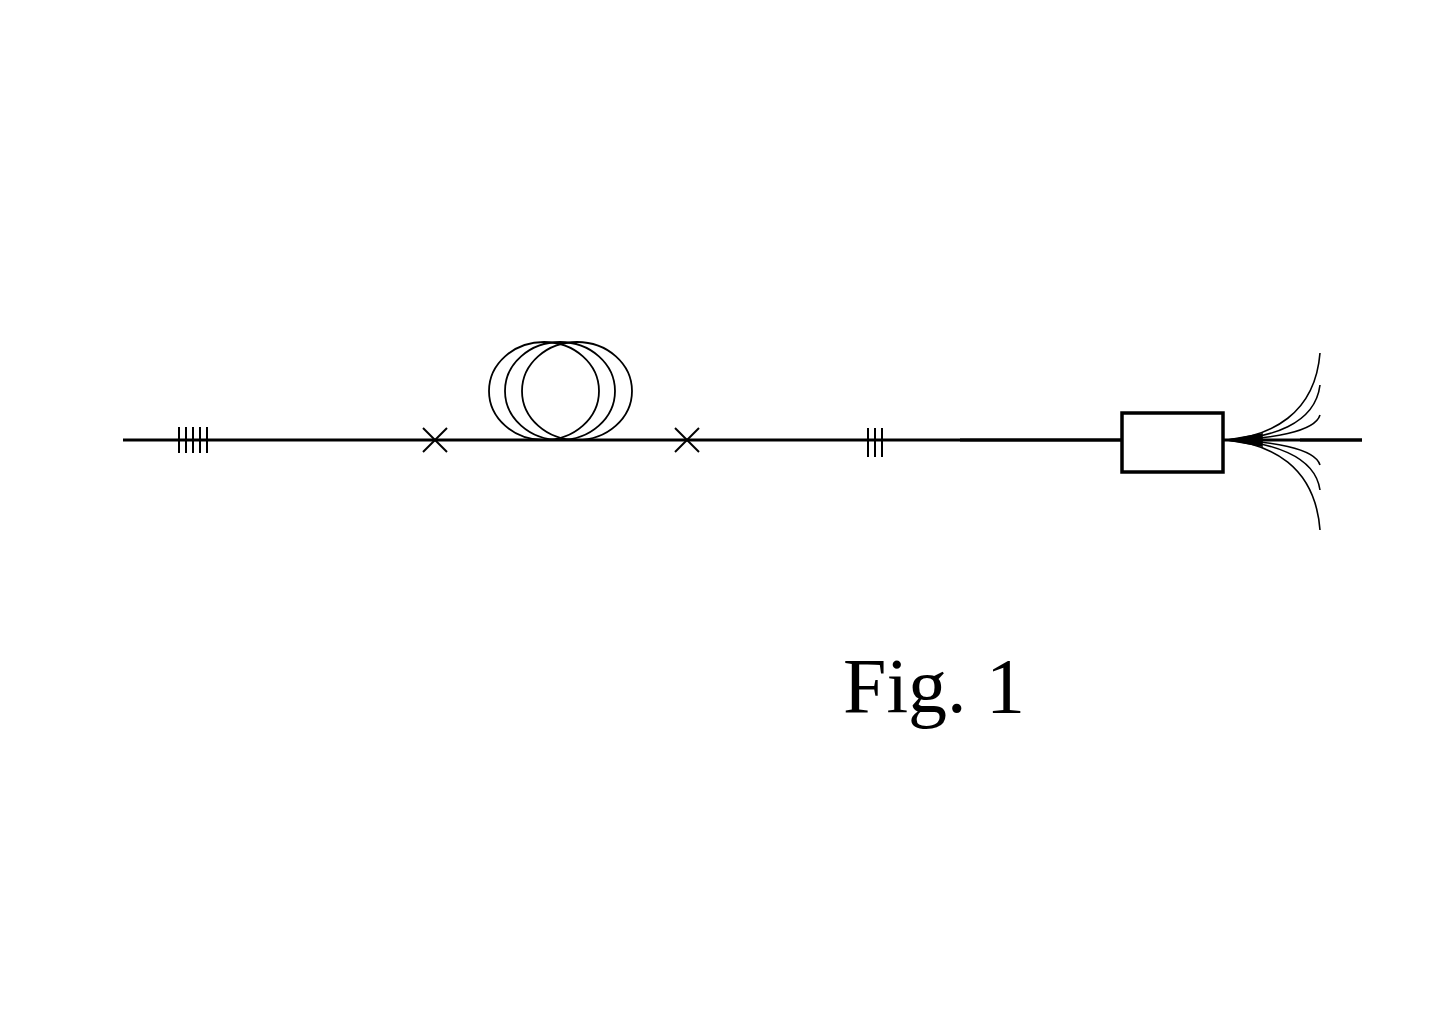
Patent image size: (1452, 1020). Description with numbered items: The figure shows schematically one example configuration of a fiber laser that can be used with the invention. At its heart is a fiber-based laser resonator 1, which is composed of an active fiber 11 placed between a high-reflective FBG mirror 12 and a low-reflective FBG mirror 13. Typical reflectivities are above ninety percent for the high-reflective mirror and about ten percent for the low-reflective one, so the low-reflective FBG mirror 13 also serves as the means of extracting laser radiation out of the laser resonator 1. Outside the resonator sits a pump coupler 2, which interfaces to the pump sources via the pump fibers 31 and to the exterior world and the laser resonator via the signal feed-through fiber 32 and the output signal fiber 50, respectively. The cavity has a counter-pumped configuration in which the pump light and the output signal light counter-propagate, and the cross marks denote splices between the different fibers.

The fiber-based laser resonator 1 is at (712, 230).
The pump coupler 2 is at (1168, 413).
The active fiber 11 is at (574, 342).
The high-reflective FBG mirror 12 is at (254, 440).
The low-reflective FBG mirror 13 is at (827, 440).
The pump fibers 31 is at (1302, 400).
The signal feed-through fiber 32 is at (1345, 440).
The output signal fiber 50 is at (1037, 440).